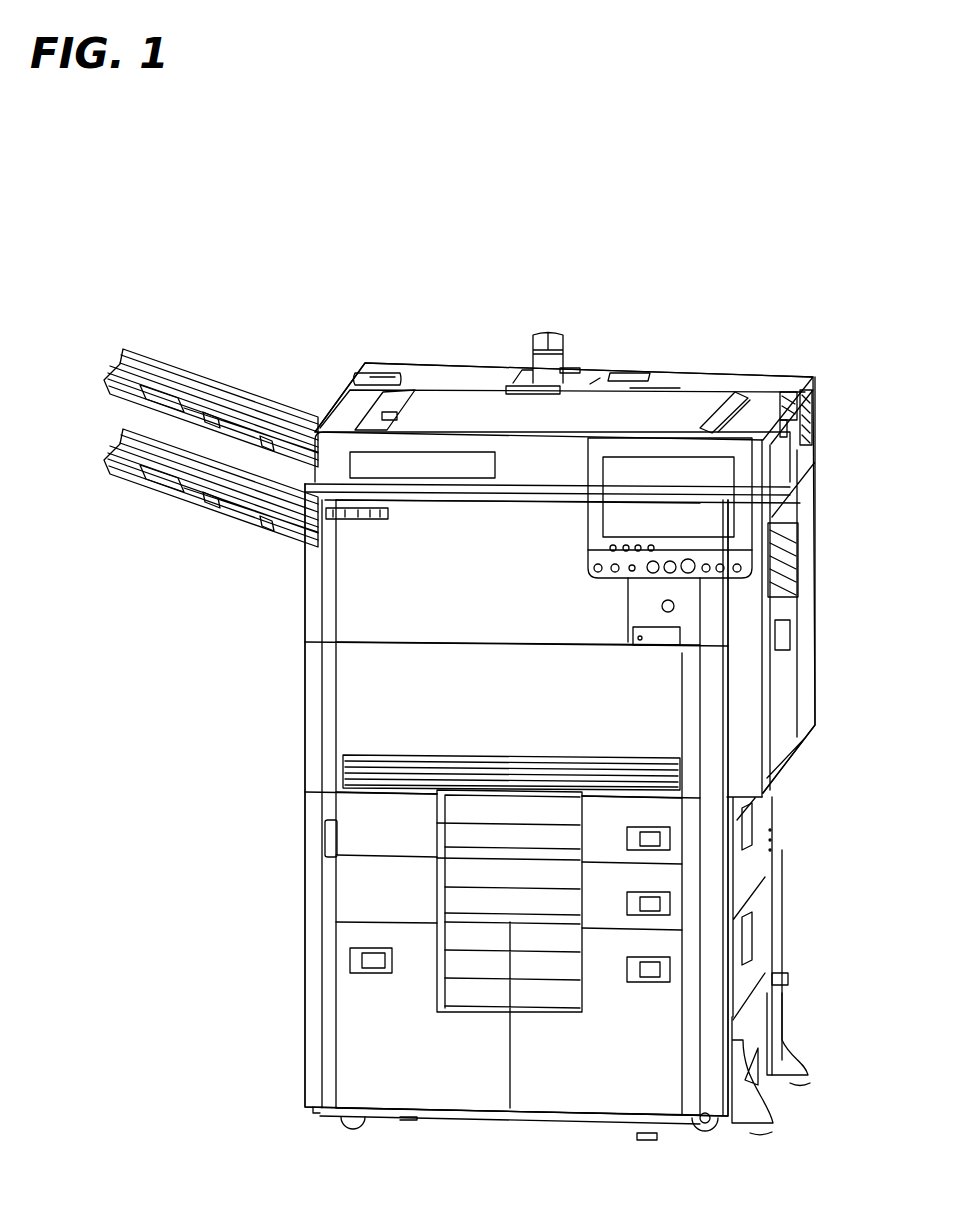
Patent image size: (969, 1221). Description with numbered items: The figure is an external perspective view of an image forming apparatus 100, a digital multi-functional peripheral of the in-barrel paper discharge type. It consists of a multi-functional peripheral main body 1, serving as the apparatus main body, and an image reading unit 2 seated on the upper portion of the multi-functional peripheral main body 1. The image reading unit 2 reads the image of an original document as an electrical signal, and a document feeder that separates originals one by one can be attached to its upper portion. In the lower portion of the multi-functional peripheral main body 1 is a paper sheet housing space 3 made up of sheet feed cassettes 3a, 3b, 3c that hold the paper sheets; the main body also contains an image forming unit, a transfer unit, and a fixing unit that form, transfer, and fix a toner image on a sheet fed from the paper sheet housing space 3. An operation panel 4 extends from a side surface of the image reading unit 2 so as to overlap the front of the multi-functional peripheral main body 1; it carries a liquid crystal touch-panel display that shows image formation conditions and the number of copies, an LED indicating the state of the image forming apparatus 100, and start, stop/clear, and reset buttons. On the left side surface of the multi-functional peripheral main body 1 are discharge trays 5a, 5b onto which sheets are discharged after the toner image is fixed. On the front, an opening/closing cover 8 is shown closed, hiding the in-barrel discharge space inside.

The image forming apparatus 100 is at (765, 337).
The multi-functional peripheral main body 1 is at (305, 732).
The image reading unit 2 is at (333, 403).
The paper sheet housing space 3 is at (165, 902).
The sheet feed cassette 3a is at (345, 835).
The sheet feed cassette 3b is at (356, 902).
The sheet feed cassette 3c is at (356, 1040).
The operation panel 4 is at (717, 507).
The discharge tray 5a is at (176, 364).
The discharge tray 5b is at (130, 476).
The opening/closing cover 8 is at (337, 600).